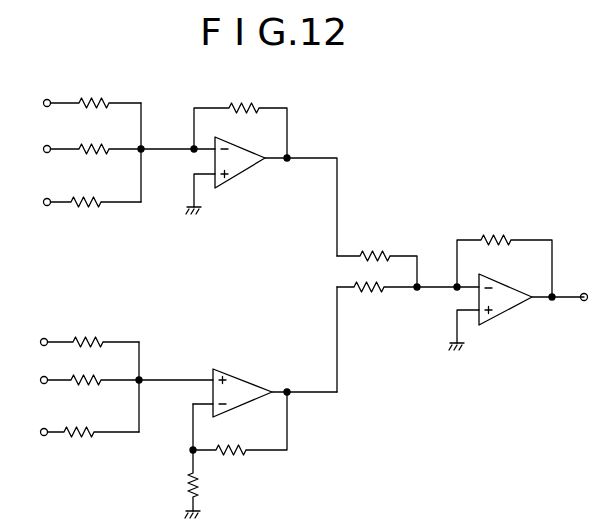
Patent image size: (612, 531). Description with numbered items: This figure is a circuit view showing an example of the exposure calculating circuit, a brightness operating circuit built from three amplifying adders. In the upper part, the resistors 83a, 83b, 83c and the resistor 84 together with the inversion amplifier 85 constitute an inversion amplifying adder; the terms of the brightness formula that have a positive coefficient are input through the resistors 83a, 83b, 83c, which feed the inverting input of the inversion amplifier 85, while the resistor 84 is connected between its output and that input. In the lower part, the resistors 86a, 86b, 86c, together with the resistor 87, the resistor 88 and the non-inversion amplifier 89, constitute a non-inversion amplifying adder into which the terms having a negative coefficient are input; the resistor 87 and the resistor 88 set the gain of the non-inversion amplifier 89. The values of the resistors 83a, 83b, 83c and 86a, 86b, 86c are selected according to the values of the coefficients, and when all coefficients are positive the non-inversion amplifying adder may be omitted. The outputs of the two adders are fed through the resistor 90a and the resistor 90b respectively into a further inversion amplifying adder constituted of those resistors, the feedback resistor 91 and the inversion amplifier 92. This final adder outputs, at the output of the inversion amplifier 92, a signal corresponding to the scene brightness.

The resistor 83a is at (96, 95).
The resistor 83b is at (93, 145).
The resistor 83c is at (87, 195).
The resistor 84 is at (247, 103).
The inversion amplifier 85 is at (240, 173).
The resistor 86a is at (90, 335).
The resistor 86b is at (93, 378).
The resistor 86c is at (85, 427).
The resistor 87 is at (233, 455).
The resistor 88 is at (188, 488).
The non-inversion amplifier 89 is at (248, 380).
The resistor 90a is at (378, 247).
The resistor 90b is at (373, 292).
The resistor 91 is at (498, 233).
The inversion amplifier 92 is at (508, 305).